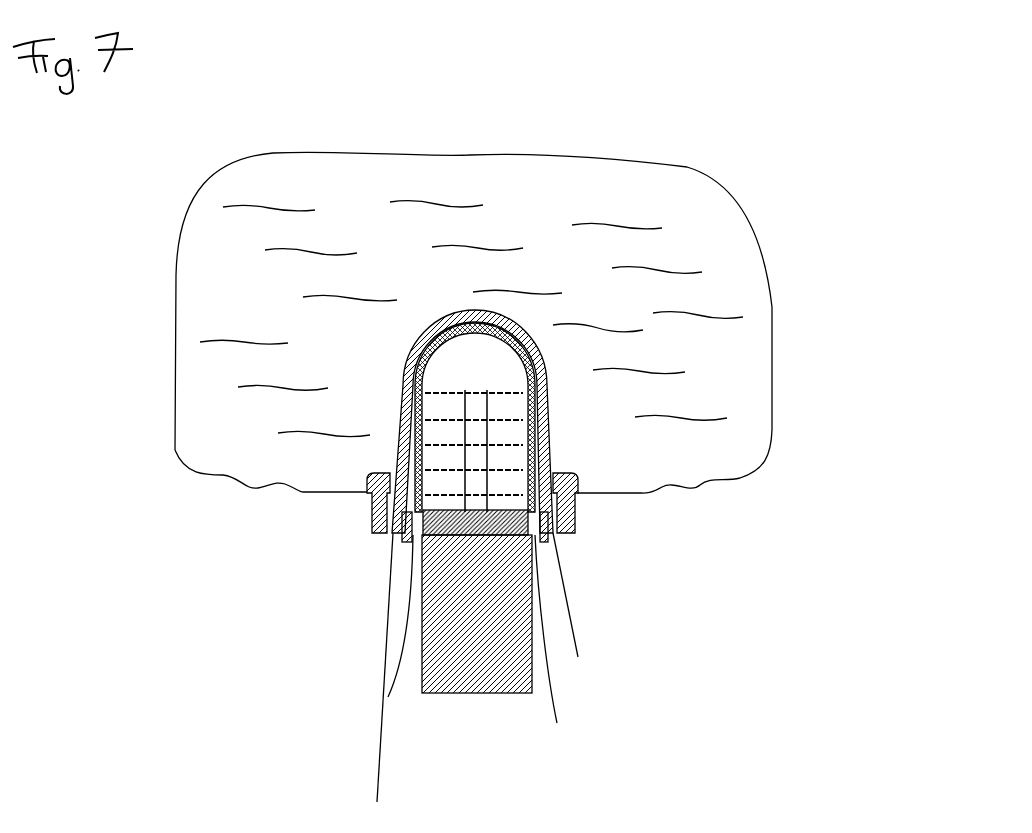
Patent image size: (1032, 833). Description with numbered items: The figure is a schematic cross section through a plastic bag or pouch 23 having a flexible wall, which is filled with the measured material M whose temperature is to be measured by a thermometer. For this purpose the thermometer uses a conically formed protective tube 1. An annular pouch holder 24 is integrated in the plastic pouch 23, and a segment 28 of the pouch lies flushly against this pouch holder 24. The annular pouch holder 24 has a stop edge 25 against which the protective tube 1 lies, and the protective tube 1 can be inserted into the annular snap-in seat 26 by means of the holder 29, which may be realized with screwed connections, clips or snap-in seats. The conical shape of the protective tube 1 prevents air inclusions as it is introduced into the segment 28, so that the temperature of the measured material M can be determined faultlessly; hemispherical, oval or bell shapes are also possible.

The protective tube 1 is at (518, 498).
The plastic pouch 23 is at (713, 487).
The annular pouch holder 24 is at (370, 505).
The stop edge 25 is at (453, 675).
The annular snap-in seat 26 is at (570, 532).
The segment 28 is at (545, 350).
The holder 29 is at (497, 643).
The measured material M is at (655, 267).